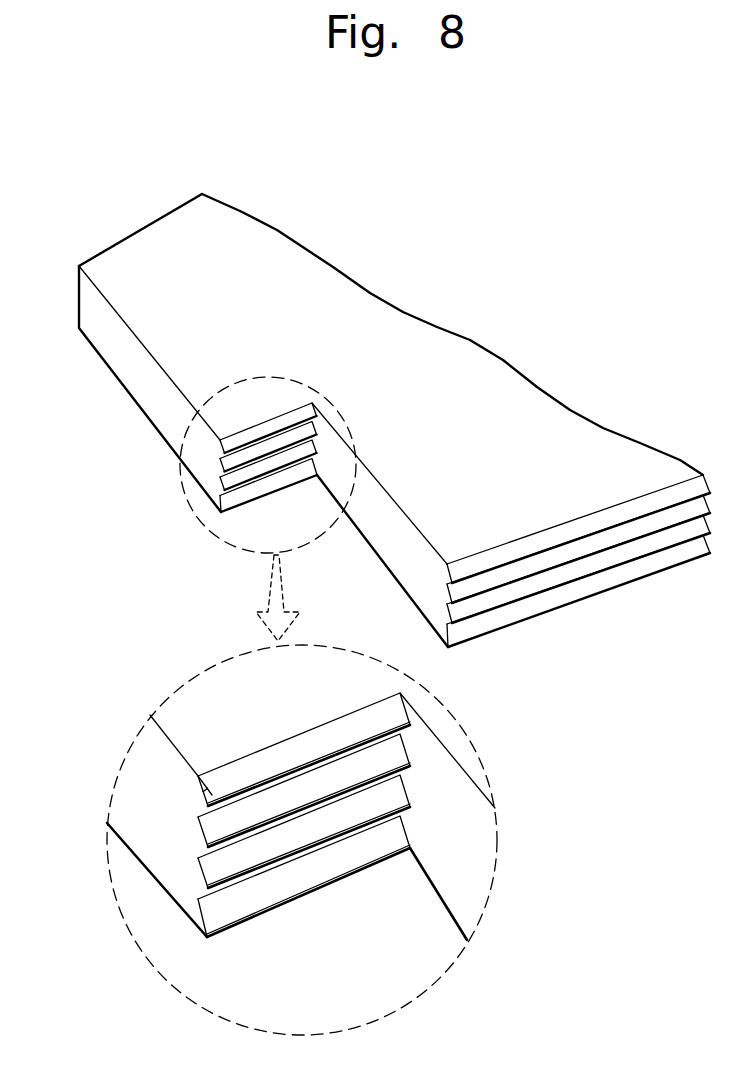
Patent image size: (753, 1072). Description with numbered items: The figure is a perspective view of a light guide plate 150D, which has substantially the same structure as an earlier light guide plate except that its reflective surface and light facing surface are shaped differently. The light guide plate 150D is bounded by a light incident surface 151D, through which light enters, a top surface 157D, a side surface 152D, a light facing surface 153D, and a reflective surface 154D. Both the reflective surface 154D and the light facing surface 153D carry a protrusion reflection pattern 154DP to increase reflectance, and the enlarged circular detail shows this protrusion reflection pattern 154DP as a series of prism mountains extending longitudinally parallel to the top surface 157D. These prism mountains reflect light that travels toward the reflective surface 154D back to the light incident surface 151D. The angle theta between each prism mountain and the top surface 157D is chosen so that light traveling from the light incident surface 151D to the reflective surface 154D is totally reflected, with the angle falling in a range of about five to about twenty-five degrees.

The light guide plate 150D is at (152, 205).
The light incident surface 151D is at (100, 253).
The side surface 152D is at (127, 367).
The light facing surface 153D is at (565, 598).
The reflective surface 154D is at (252, 490).
The protrusion reflection pattern 154DP is at (307, 877).
The top surface 157D is at (472, 358).